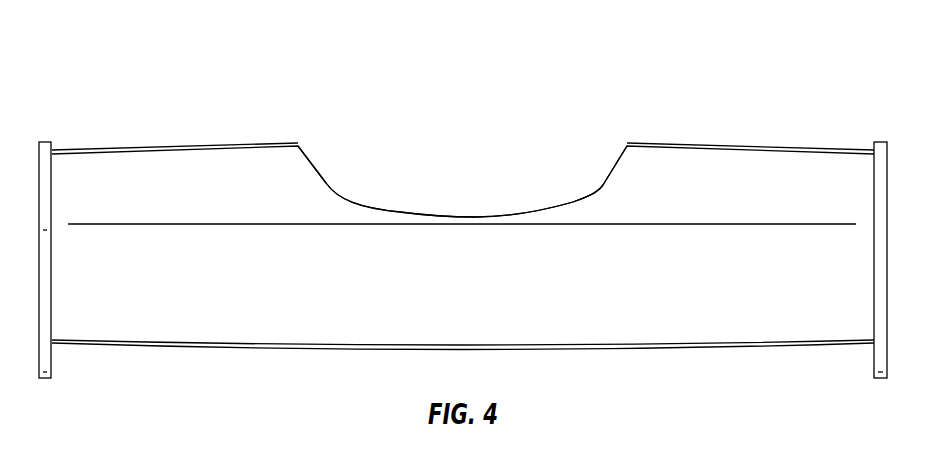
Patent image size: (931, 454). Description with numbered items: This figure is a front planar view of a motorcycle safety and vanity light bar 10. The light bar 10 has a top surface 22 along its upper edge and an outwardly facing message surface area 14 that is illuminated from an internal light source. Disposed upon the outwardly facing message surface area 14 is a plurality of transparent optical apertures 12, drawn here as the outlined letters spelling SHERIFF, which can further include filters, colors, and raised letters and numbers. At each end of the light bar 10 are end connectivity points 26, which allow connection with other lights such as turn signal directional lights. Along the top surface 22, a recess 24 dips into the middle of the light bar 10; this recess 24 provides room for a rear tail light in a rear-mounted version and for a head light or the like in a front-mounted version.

The motorcycle safety and vanity light bar 10 is at (451, 223).
The transparent optical apertures 12 is at (332, 323).
The outwardly facing message surface area 14 is at (133, 323).
The top surface 22 is at (170, 163).
The recess 24 is at (540, 197).
The end connectivity points 26 is at (43, 151).